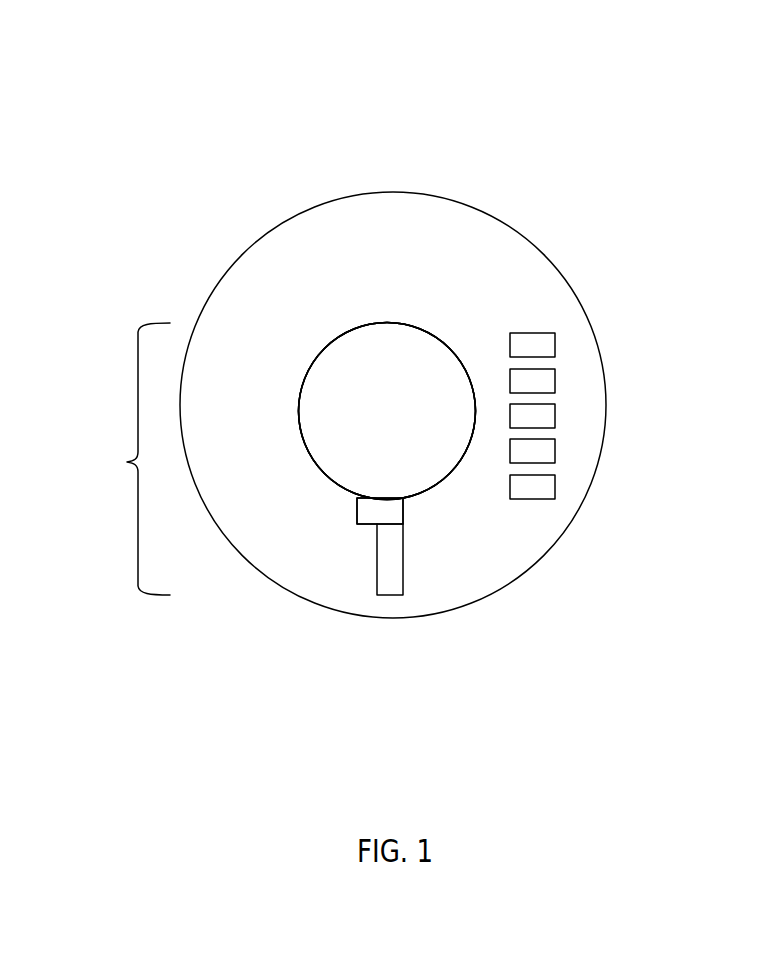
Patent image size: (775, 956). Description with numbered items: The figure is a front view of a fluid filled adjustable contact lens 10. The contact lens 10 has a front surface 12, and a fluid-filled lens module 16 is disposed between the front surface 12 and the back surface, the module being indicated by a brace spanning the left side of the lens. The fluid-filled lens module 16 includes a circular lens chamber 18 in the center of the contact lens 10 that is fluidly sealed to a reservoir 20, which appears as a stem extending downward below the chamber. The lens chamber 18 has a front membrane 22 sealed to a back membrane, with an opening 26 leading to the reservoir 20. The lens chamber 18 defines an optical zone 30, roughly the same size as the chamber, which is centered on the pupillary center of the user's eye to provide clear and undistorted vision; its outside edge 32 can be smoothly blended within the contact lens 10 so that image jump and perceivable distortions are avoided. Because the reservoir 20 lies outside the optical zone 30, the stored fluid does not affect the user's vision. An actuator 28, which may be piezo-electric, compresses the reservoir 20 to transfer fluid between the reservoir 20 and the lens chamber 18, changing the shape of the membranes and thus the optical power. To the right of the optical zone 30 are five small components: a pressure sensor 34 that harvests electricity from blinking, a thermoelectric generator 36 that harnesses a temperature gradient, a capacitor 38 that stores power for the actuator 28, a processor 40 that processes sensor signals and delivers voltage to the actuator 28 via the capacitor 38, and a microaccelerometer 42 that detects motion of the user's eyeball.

The contact lens 10 is at (192, 154).
The front surface 12 is at (475, 238).
The fluid-filled lens module 16 is at (127, 462).
The lens chamber 18 is at (392, 356).
The reservoir 20 is at (403, 562).
The front membrane 22 is at (430, 377).
The opening 26 is at (403, 500).
The actuator 28 is at (380, 512).
The optical zone 30 is at (452, 343).
The outside edge 32 is at (323, 350).
The pressure sensor 34 is at (540, 345).
The thermoelectric generator 36 is at (540, 381).
The capacitor 38 is at (540, 416).
The processor 40 is at (540, 451).
The microaccelerometer 42 is at (540, 487).